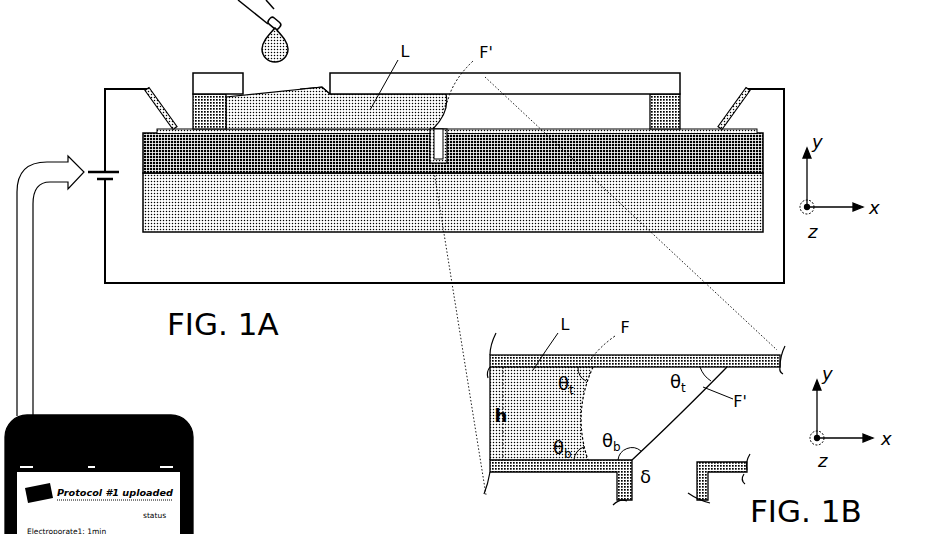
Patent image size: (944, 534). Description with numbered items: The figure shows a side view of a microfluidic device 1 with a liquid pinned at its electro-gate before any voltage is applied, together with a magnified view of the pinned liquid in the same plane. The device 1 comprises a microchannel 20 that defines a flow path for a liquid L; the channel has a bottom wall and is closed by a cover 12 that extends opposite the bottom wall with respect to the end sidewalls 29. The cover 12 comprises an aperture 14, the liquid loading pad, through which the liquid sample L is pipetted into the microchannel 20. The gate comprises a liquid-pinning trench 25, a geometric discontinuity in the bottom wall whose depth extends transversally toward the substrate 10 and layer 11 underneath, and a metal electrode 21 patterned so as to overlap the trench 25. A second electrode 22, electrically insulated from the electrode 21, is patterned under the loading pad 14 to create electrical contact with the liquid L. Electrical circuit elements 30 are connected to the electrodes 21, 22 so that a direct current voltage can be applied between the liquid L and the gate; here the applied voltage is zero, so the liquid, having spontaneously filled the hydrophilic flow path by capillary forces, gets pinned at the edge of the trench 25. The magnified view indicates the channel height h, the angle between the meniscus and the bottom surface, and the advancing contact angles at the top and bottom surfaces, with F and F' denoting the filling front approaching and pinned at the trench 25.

In FIG. 1A, the microfluidic device 1 is at (537, 237).
In FIG. 1A, the substrate 10 is at (278, 232).
In FIG. 1A, the layer 11 is at (319, 178).
In FIG. 1A, the cover 12 is at (544, 73).
In FIG. 1B, the cover 12 is at (673, 356).
In FIG. 1A, the aperture 14 is at (322, 73).
In FIG. 1A, the microchannel 20 is at (614, 107).
In FIG. 1A, the electrode 21 is at (560, 129).
In FIG. 1B, the electrode 21 is at (566, 477).
In FIG. 1A, the second electrode 22 is at (247, 129).
In FIG. 1A, the liquid-pinning trench 25 is at (440, 126).
In FIG. 1B, the liquid-pinning trench 25 is at (672, 472).
In FIG. 1A, the end sidewalls 29 is at (192, 101).
In FIG. 1A, the electrical circuit elements 30 is at (103, 228).